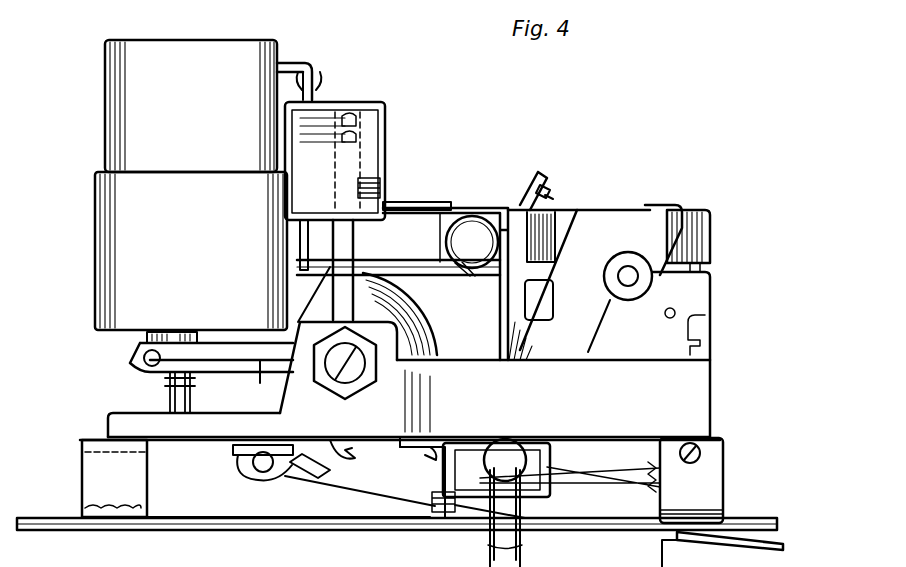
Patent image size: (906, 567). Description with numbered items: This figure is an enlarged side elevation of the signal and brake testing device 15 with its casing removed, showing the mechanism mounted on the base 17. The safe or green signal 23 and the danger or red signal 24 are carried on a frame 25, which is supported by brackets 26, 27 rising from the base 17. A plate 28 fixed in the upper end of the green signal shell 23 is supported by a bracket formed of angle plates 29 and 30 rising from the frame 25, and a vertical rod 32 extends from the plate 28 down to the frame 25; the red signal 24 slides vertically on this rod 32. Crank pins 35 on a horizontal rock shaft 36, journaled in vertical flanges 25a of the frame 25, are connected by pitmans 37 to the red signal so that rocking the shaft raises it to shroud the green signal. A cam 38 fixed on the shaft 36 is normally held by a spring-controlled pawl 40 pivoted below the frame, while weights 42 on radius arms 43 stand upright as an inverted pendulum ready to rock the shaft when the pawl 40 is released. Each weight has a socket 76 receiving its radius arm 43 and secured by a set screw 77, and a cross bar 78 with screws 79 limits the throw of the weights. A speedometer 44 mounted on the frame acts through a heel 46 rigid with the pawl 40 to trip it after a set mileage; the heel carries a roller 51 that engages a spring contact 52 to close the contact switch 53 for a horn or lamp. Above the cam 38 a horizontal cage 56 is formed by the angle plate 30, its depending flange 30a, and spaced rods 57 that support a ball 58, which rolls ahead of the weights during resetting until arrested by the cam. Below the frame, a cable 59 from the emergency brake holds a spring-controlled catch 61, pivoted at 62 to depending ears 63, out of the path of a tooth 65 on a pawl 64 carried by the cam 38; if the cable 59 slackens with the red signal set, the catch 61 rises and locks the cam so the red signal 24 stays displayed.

The signal and brake testing device 15 is at (447, 153).
The base 17 is at (225, 530).
The safe signal 23 is at (118, 46).
The danger signal 24 is at (95, 190).
The frame 25 is at (118, 413).
The vertical flanges 25a is at (450, 392).
The bracket 26 is at (82, 474).
The bracket 27 is at (705, 478).
The plate 28 is at (295, 62).
The angle plate 29 is at (400, 202).
The angle plate 30 is at (475, 209).
The depending flange 30a is at (312, 294).
The vertical rod 32 is at (197, 400).
The crank pins 35 is at (324, 367).
The rock shaft 36 is at (338, 375).
The pitmans 37 is at (138, 348).
The cam 38 is at (402, 308).
The spring-controlled pawl 40 is at (440, 450).
The weights 42 is at (358, 118).
The radius arms 43 is at (356, 240).
The speedometer 44 is at (722, 255).
The heel 46 is at (574, 447).
The roller 51 is at (650, 460).
The spring contact 52 is at (594, 470).
The contact switch 53 is at (480, 446).
The horizontal cage 56 is at (440, 212).
The spaced rods 57 is at (470, 278).
The ball 58 is at (472, 242).
The cable 59 is at (758, 533).
The spring-controlled catch 61 is at (310, 484).
The pivot 62 is at (252, 462).
The ears 63 is at (246, 478).
The spring-controlled pawl 64 is at (360, 440).
The tooth 65 is at (398, 461).
The socket 76 is at (380, 104).
The ridged member 77 is at (372, 185).
The cross bar 78 is at (537, 170).
The screws 79 is at (553, 188).